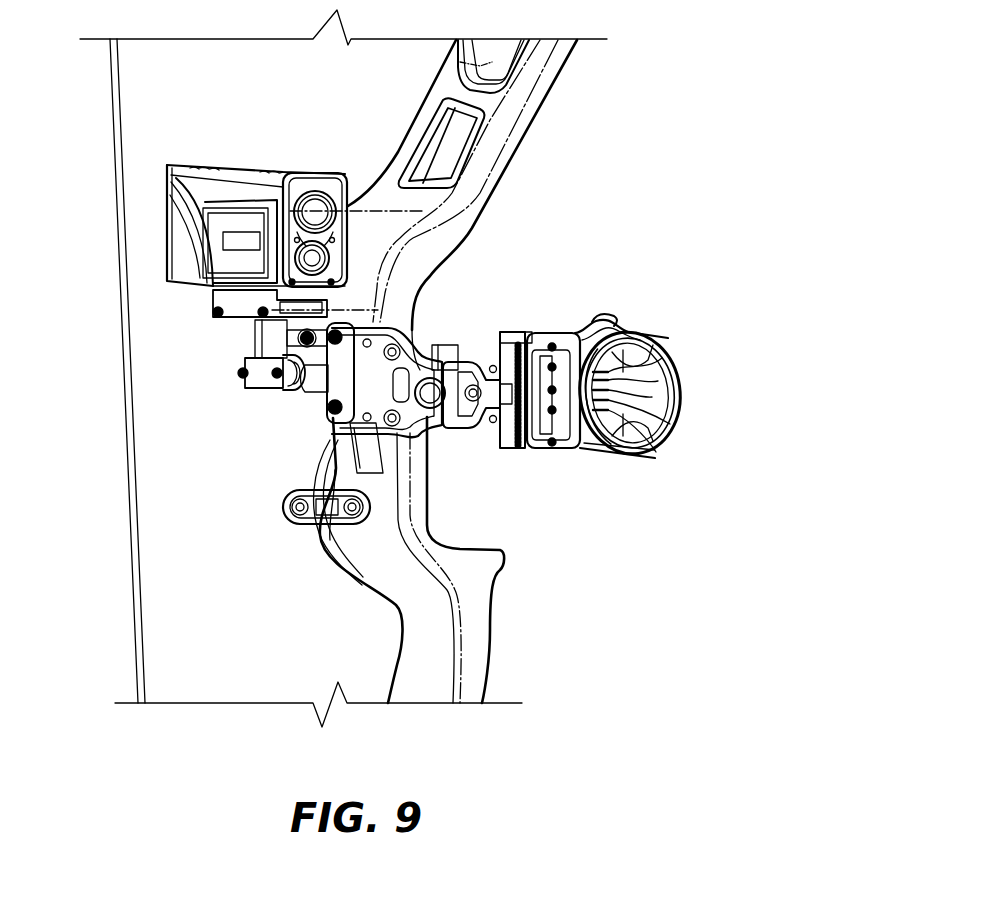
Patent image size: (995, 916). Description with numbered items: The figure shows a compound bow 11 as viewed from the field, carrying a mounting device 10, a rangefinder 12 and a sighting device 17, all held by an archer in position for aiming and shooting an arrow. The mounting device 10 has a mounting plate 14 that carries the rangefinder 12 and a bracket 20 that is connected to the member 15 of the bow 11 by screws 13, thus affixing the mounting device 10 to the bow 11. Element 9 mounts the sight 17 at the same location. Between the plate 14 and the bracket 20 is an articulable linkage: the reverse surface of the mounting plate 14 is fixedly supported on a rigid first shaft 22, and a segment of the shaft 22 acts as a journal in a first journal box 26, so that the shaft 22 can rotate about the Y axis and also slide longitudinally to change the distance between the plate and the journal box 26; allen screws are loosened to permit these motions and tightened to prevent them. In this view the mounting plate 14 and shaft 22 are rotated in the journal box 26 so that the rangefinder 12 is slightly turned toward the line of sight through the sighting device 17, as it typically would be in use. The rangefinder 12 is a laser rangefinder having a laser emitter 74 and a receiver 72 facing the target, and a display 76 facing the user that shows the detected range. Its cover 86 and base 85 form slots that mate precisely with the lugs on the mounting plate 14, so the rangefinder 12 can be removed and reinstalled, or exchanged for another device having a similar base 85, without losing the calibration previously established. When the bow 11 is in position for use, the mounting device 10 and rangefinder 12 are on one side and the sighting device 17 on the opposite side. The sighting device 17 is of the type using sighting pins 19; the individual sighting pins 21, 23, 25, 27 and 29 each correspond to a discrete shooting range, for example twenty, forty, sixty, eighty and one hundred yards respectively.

The element 9 is at (422, 394).
The mounting device 10 is at (260, 449).
The compound bow 11 is at (546, 148).
The rangefinder 12 is at (213, 172).
The screws 13 is at (298, 340).
The mounting plate 14 is at (332, 310).
The member 15 is at (372, 345).
The sighting device 17 is at (686, 395).
The sighting pins 19 is at (733, 435).
The bracket 20 is at (328, 418).
The sighting pin 21 is at (662, 358).
The first shaft 22 is at (256, 331).
The sighting pin 23 is at (658, 381).
The sighting pin 25 is at (652, 397).
The first journal box 26 is at (246, 383).
The sighting pin 27 is at (670, 424).
The sighting pin 29 is at (689, 478).
The receiver 72 is at (315, 192).
The laser emitter 74 is at (322, 259).
The display 76 is at (143, 212).
The base 85 is at (214, 307).
The cover 86 is at (252, 166).